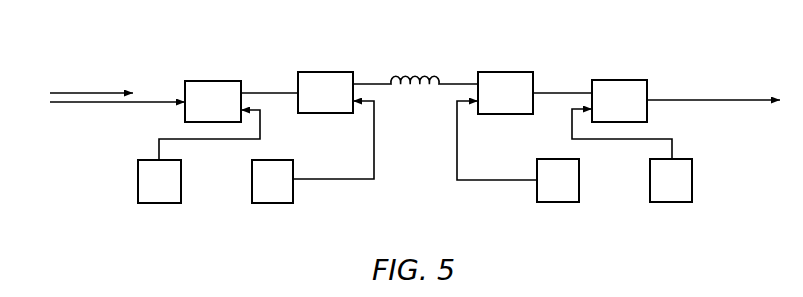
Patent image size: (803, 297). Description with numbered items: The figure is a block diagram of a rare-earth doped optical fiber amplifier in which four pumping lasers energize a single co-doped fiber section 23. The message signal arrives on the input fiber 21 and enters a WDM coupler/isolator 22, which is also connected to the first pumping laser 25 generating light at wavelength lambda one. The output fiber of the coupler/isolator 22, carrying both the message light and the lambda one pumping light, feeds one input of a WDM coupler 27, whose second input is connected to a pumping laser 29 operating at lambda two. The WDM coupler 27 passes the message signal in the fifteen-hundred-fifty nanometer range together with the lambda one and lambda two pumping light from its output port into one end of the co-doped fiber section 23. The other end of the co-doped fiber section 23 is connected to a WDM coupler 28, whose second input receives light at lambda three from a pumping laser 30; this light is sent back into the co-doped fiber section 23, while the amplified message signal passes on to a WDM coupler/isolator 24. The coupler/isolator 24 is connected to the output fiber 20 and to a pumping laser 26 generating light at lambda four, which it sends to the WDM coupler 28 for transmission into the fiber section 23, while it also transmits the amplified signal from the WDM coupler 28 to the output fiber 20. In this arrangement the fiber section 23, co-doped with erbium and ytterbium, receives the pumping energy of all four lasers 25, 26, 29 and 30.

The output fiber 20 is at (730, 99).
The input fiber 21 is at (79, 105).
The WDM coupler/isolator 22 is at (210, 80).
The co-doped fiber section 23 is at (420, 75).
The WDM coupler/isolator 24 is at (622, 79).
The first pumping laser 25 is at (147, 158).
The pumping laser 26 is at (683, 158).
The WDM coupler 27 is at (325, 70).
The WDM coupler 28 is at (508, 71).
The pumping laser 29 is at (250, 178).
The pumping laser 30 is at (579, 180).